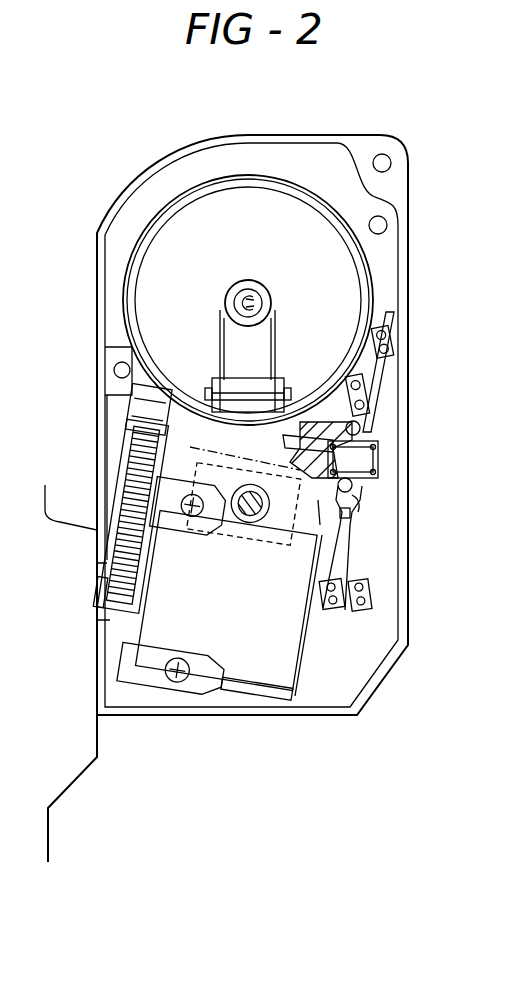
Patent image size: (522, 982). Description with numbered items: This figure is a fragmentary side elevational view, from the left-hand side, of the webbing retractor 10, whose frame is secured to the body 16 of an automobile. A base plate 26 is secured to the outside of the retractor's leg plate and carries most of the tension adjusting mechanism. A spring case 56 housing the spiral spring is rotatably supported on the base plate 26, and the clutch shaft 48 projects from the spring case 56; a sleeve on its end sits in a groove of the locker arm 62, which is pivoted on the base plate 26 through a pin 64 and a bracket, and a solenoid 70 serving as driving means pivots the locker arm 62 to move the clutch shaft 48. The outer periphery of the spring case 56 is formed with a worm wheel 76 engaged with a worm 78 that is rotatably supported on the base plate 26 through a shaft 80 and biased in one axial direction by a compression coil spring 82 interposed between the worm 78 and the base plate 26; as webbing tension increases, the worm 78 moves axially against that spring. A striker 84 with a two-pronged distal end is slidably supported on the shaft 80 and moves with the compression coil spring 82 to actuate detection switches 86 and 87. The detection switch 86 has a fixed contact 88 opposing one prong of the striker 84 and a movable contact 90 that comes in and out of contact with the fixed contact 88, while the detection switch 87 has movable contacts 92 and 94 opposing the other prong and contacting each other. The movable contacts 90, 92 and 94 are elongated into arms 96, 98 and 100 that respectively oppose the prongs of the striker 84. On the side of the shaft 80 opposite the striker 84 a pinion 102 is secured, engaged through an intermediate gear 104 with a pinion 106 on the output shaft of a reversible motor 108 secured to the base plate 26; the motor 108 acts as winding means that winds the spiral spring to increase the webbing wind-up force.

The webbing retractor 10 is at (102, 182).
The body 16 is at (95, 760).
The base plate 26 is at (398, 268).
The clutch shaft 48 is at (270, 293).
The spring case 56 is at (290, 205).
The locker arm 62 is at (232, 352).
The pin 64 is at (272, 378).
The solenoid 70 is at (207, 545).
The worm wheel 76 is at (128, 344).
The worm 78 is at (165, 447).
The shaft 80 is at (300, 476).
The compression coil spring 82 is at (355, 488).
The striker 84 is at (322, 430).
The detection switch 86 is at (385, 372).
The detection switch 87 is at (376, 541).
The fixed contact 88 is at (355, 405).
The movable contact 90 is at (367, 422).
The movable contact 92 is at (325, 557).
The movable contact 94 is at (352, 513).
The arm 96 is at (378, 450).
The arm 98 is at (368, 502).
The arm 100 is at (322, 500).
The pinion 102 is at (128, 396).
The intermediate gear 104 is at (123, 533).
The pinion 106 is at (103, 619).
The reversible motor 108 is at (306, 648).